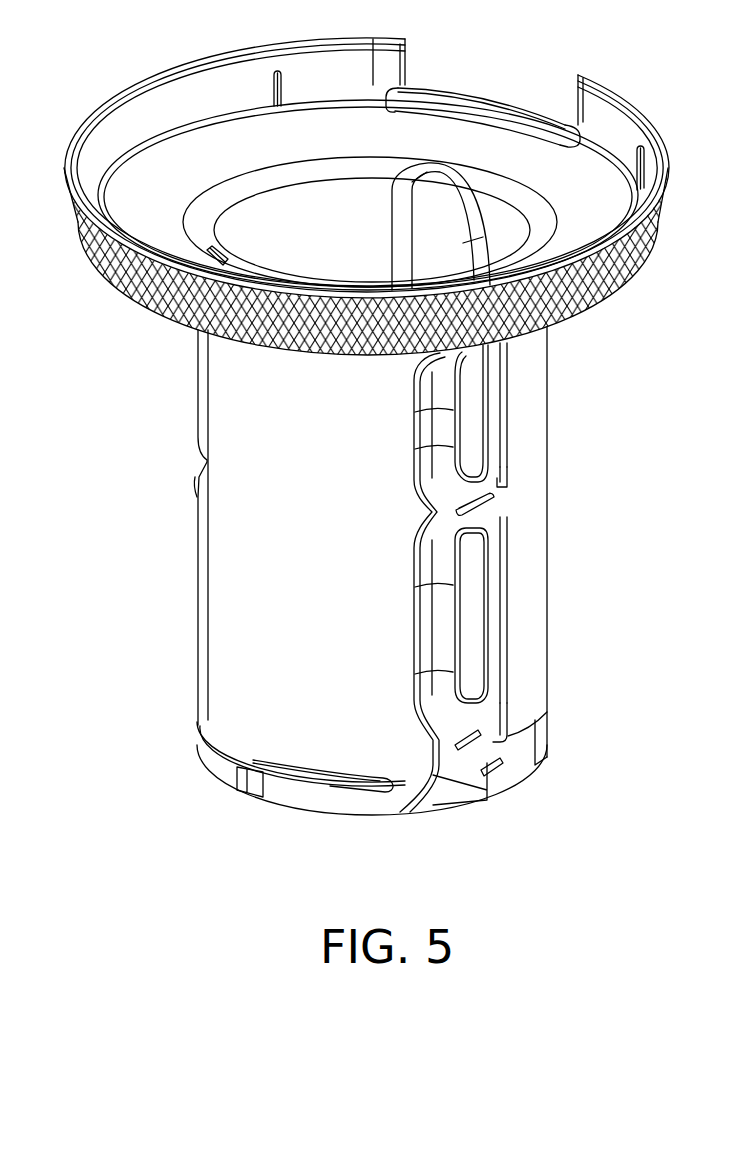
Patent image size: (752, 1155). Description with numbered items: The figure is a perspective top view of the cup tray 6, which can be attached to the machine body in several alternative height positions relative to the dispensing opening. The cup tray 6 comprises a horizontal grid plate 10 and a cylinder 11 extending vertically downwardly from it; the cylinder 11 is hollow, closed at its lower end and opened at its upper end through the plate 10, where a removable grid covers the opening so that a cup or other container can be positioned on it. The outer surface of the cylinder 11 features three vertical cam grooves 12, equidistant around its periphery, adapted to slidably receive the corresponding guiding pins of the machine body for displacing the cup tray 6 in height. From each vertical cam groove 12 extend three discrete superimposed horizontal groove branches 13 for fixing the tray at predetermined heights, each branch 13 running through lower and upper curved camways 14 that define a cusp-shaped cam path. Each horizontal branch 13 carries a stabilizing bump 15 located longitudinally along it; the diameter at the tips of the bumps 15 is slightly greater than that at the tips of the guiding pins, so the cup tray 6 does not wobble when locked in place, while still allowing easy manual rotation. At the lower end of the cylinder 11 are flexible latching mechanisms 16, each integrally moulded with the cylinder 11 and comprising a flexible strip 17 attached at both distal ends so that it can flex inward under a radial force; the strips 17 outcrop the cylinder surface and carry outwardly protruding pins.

The cup tray 6 is at (504, 93).
The horizontal grid plate 10 is at (125, 187).
The cylinder 11 is at (547, 598).
The vertical cam groove 12 is at (440, 640).
The horizontal groove branch 13 is at (500, 513).
The curved camway 14 is at (481, 468).
The stabilizing bump 15 is at (497, 497).
The flexible latching mechanism 16 is at (228, 779).
The flexible strip 17 is at (372, 800).